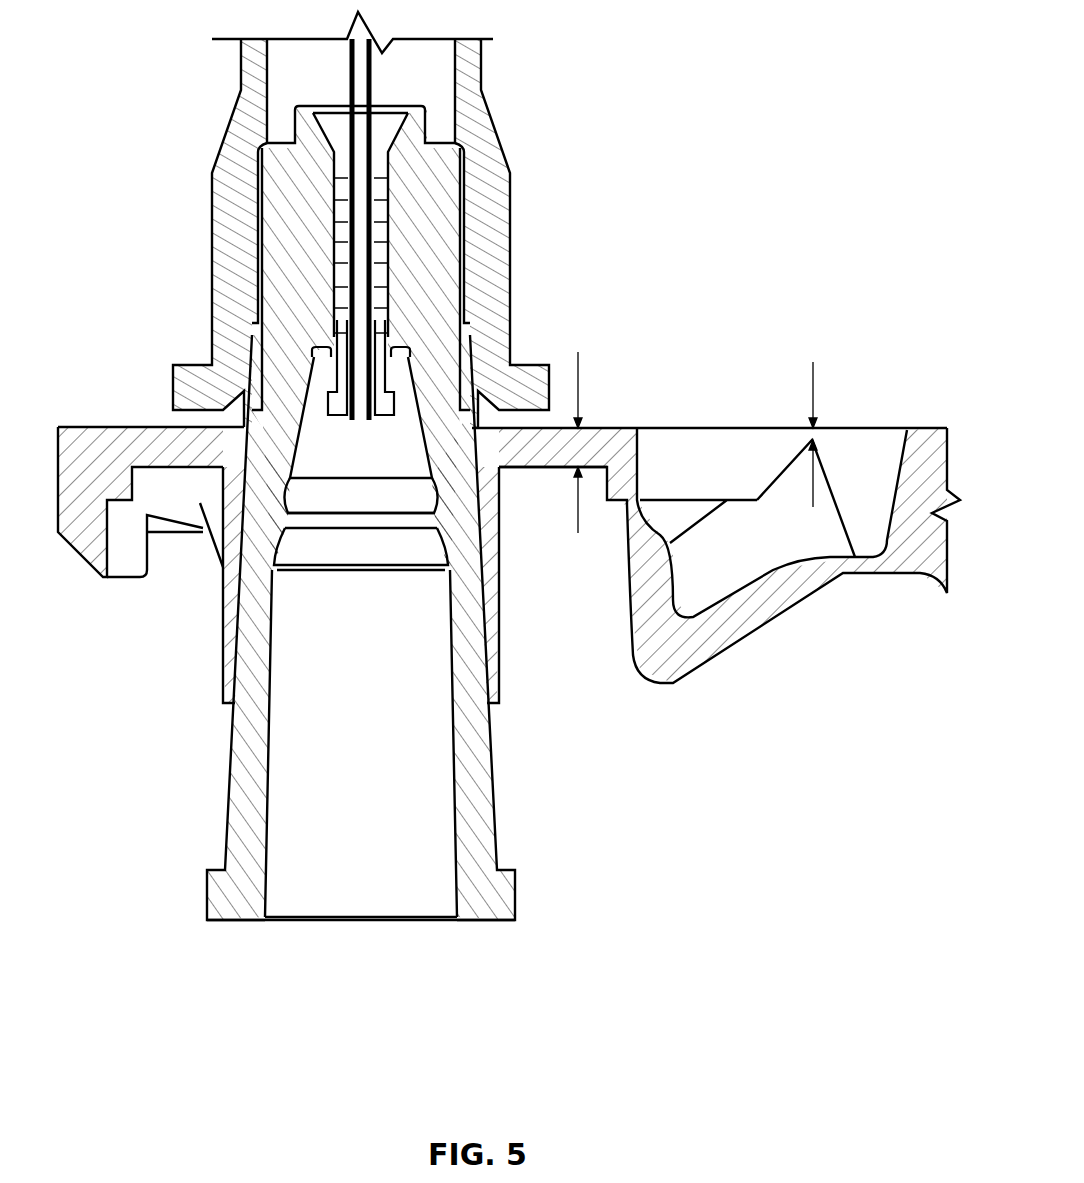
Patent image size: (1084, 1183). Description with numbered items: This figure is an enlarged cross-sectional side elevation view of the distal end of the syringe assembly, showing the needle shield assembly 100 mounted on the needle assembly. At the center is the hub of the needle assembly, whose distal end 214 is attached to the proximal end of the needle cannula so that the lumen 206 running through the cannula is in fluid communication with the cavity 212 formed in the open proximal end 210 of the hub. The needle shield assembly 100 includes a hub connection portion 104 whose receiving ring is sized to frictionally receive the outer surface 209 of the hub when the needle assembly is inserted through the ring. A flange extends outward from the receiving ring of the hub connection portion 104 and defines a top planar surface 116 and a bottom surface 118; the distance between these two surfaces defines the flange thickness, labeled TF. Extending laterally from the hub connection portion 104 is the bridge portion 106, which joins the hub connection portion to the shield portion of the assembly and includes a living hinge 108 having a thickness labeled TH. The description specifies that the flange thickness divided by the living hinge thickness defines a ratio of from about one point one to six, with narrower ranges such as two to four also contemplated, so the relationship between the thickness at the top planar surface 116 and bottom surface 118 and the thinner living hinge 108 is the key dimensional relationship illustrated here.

The needle shield assembly 100 is at (130, 103).
The hub connection portion 104 is at (90, 417).
The bridge portion 106 is at (736, 376).
The living hinge 108 is at (815, 436).
The top planar surface 116 is at (607, 428).
The bottom surface 118 is at (537, 467).
The lumen 206 is at (360, 94).
The outer surface 209 is at (237, 728).
The open proximal end 210 is at (364, 938).
The cavity 212 is at (380, 808).
The distal end 214 is at (292, 352).